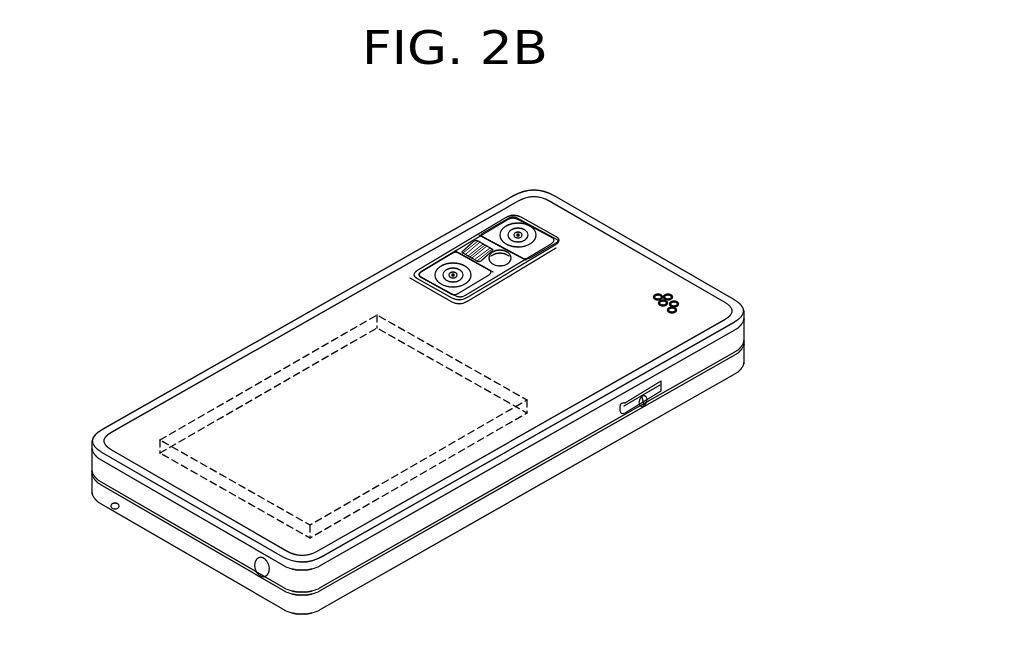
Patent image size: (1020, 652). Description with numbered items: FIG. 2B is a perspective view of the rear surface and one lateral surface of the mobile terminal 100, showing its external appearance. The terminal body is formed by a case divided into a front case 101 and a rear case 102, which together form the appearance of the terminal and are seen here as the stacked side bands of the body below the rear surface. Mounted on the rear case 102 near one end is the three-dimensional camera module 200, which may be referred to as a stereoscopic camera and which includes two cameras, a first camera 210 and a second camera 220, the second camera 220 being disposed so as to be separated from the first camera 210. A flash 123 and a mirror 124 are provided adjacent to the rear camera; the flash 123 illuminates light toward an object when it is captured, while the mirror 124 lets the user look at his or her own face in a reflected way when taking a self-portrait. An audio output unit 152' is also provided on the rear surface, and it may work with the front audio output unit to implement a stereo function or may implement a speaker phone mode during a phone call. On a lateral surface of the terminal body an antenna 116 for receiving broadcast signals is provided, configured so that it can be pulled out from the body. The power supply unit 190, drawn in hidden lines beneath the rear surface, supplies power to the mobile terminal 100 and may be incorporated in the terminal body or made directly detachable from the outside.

The mobile terminal 100 is at (290, 286).
The front case 101 is at (743, 357).
The rear case 102 is at (743, 337).
The antenna 116 is at (259, 574).
The flash 123 is at (484, 249).
The mirror 124 is at (505, 262).
The audio output unit 152' is at (708, 271).
The power supply unit 190 is at (273, 381).
The 3D camera module 200 is at (437, 157).
The first camera 210 is at (453, 275).
The second camera 220 is at (518, 235).